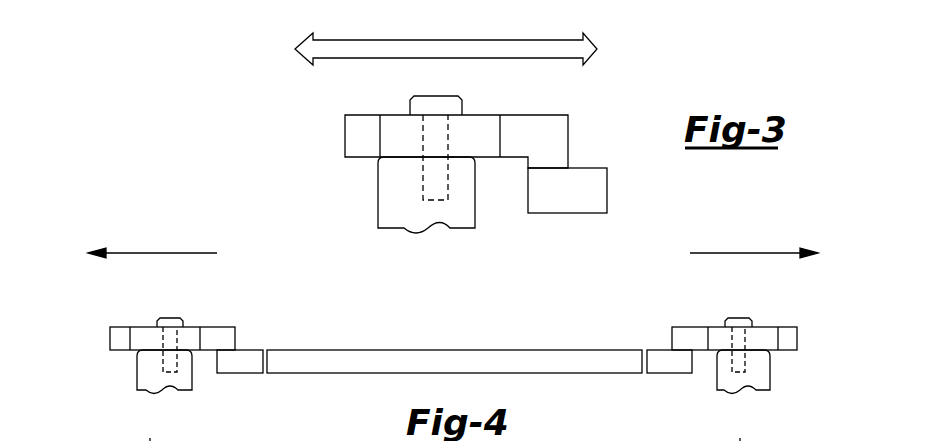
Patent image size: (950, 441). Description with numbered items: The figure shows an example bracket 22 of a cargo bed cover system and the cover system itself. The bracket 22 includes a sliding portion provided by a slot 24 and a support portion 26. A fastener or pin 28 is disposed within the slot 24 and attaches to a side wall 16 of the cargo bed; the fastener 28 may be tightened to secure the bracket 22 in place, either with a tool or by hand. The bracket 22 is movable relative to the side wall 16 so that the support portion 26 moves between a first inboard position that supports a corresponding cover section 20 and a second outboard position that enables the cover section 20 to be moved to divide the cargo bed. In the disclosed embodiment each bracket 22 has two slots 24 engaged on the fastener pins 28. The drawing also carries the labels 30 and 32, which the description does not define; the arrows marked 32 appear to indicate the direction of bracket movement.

In FIG. 3, the side wall 16 is at (378, 192).
In FIG. 4, the side wall 16 is at (137, 375).
In FIG. 4, the cover section 20 is at (455, 362).
In FIG. 3, the bracket 22 is at (574, 101).
In FIG. 4, the bracket 22 is at (105, 336).
In FIG. 3, the slot 24 is at (478, 140).
In FIG. 4, the slot 24 is at (143, 333).
In FIG. 3, the support portion 26 is at (560, 202).
In FIG. 4, the support portion 26 is at (235, 362).
In FIG. 3, the fastener 28 is at (418, 108).
In FIG. 4, the fastener 28 is at (172, 317).
In FIG. 4, the base 30 is at (158, 431).
In FIG. 4, the direction of movement 32 is at (153, 253).